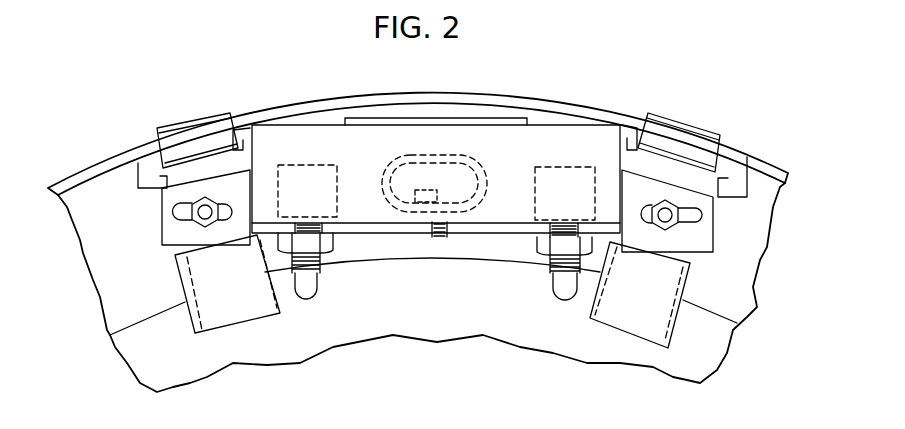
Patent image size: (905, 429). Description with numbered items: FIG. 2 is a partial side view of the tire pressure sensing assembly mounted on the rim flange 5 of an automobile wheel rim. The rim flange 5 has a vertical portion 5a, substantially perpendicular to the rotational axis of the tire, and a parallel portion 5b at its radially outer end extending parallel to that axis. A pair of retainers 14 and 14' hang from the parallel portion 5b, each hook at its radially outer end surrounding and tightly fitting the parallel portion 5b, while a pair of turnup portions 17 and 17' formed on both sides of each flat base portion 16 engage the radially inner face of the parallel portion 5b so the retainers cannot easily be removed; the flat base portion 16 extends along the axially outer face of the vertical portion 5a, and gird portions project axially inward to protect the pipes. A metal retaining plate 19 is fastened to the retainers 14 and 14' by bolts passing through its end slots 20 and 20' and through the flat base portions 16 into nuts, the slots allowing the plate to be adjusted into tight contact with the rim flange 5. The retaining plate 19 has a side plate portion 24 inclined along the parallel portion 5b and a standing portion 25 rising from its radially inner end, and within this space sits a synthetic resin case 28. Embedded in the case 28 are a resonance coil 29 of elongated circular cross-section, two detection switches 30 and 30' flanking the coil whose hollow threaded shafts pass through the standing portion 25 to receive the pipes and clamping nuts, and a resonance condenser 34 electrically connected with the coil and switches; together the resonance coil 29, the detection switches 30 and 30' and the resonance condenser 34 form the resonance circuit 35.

The rim flange 5 is at (110, 310).
The vertical portion 5a is at (82, 215).
The parallel portion 5b is at (95, 160).
The retainer 14 is at (751, 131).
The retainer 14' is at (144, 126).
The flat base portion 16 is at (667, 313).
The turnup portion 17 is at (700, 174).
The turnup portion 17' is at (404, 131).
The retaining plate 19 is at (413, 234).
The slot 20 is at (698, 229).
The slot 20' is at (178, 223).
The side plate portion 24 is at (437, 123).
The standing portion 25 is at (365, 233).
The case 28 is at (293, 132).
The resonance coil 29 is at (475, 160).
The detection switch 30 is at (564, 173).
The detection switch 30' is at (325, 174).
The resonance condenser 34 is at (448, 205).
The resonance circuit 35 is at (575, 150).